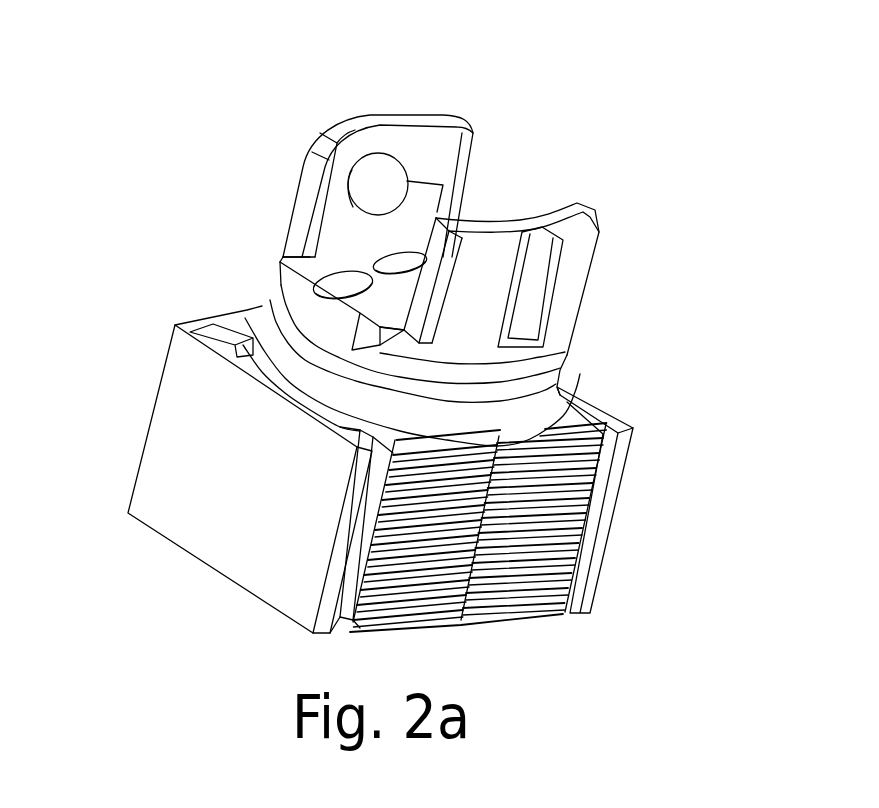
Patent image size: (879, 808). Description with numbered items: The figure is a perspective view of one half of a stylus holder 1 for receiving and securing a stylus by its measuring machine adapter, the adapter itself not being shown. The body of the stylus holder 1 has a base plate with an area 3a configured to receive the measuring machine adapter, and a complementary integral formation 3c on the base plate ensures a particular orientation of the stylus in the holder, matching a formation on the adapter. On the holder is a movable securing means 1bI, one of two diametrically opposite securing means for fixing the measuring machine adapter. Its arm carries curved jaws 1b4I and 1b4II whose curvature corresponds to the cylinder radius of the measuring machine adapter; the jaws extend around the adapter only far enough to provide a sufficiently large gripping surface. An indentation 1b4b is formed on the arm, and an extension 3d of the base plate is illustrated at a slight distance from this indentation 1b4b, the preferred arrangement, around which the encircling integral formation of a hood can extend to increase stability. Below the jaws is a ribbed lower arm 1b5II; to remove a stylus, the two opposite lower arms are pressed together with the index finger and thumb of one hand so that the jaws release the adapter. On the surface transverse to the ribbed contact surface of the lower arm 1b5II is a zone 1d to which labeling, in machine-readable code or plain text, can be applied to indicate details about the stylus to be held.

The stylus holder 1 is at (403, 170).
The jaw 1b4I is at (348, 127).
The securing means 1bI is at (360, 200).
The complementary integral formation 3c is at (340, 278).
The extension 3d is at (260, 308).
The area 3a is at (397, 265).
The jaw 1b4II is at (567, 270).
The indentation 1b4b is at (577, 331).
The lower arm 1b5II is at (537, 533).
The zone 1d is at (215, 527).